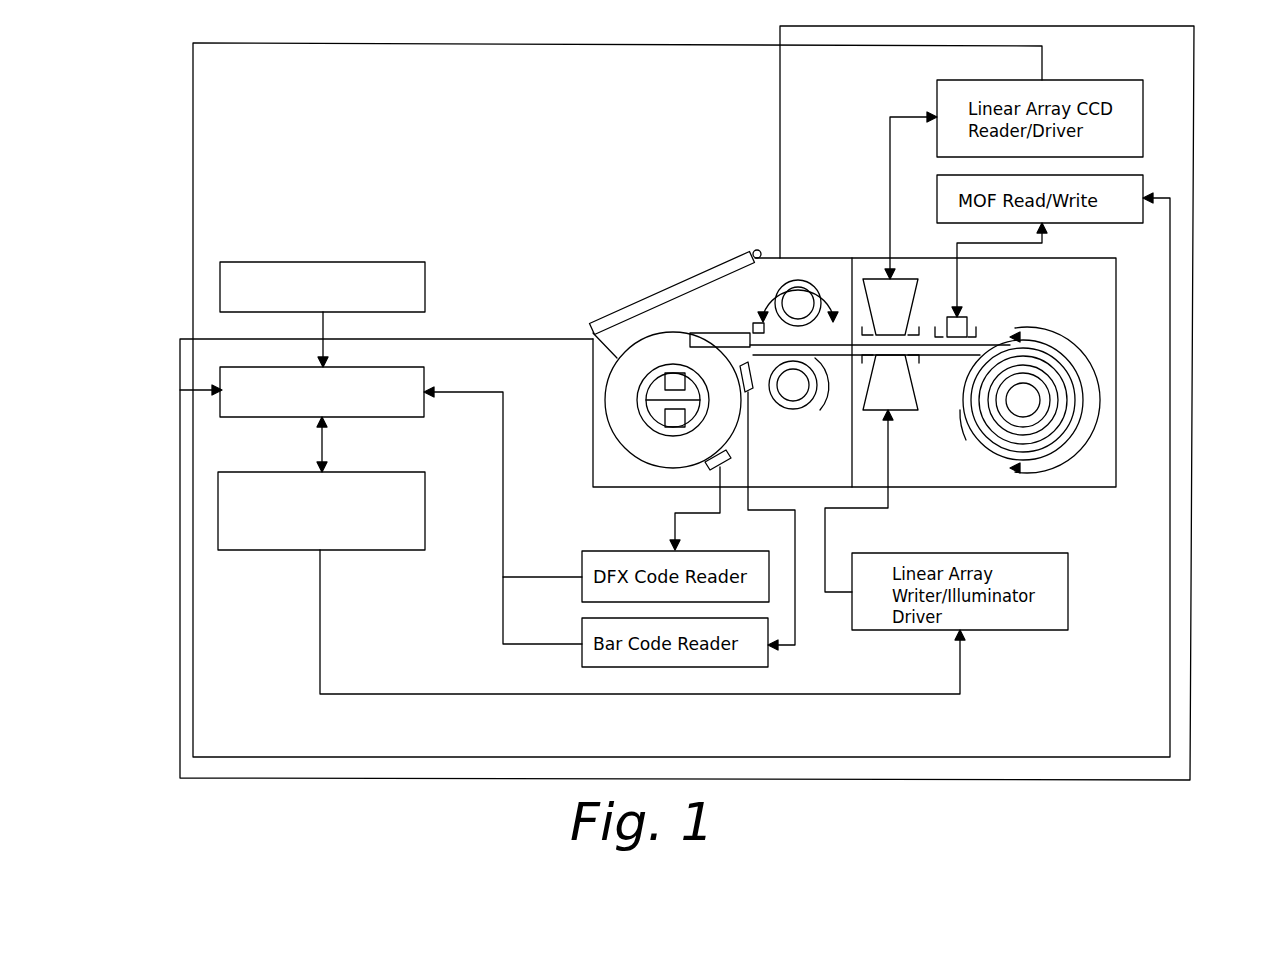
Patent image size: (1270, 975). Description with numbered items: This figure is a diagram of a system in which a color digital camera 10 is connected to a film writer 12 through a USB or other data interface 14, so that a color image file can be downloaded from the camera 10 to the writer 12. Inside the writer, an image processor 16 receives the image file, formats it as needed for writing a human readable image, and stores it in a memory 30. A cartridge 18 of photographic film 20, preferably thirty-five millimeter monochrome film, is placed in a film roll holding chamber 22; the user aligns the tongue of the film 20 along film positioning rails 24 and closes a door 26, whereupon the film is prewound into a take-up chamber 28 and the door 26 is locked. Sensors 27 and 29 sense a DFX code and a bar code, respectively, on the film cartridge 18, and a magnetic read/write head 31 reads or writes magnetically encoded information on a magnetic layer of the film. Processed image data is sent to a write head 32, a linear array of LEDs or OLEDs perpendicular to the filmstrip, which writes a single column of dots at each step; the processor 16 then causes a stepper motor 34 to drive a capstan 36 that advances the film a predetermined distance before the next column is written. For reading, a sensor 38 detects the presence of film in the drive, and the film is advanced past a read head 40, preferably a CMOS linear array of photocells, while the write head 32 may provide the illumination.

The color digital camera 10 is at (423, 271).
The film writer 12 is at (1192, 107).
The data interface 14 is at (323, 328).
The processor 16 is at (412, 410).
The film cartridge 18 is at (650, 347).
The photographic film 20 is at (982, 338).
The film roll holding chamber 22 is at (602, 385).
The film positioning rails 24 is at (801, 401).
The door 26 is at (723, 265).
The DFX code sensor 27 is at (718, 466).
The take-up chamber 28 is at (1088, 363).
The bar code sensor 29 is at (752, 392).
The memory 30 is at (421, 502).
The magnetic read/write head 31 is at (977, 310).
The write head 32 is at (902, 407).
The stepper motor 34 is at (798, 292).
The capstan 36 is at (791, 392).
The sensor 38 is at (753, 325).
The read head 40 is at (897, 290).